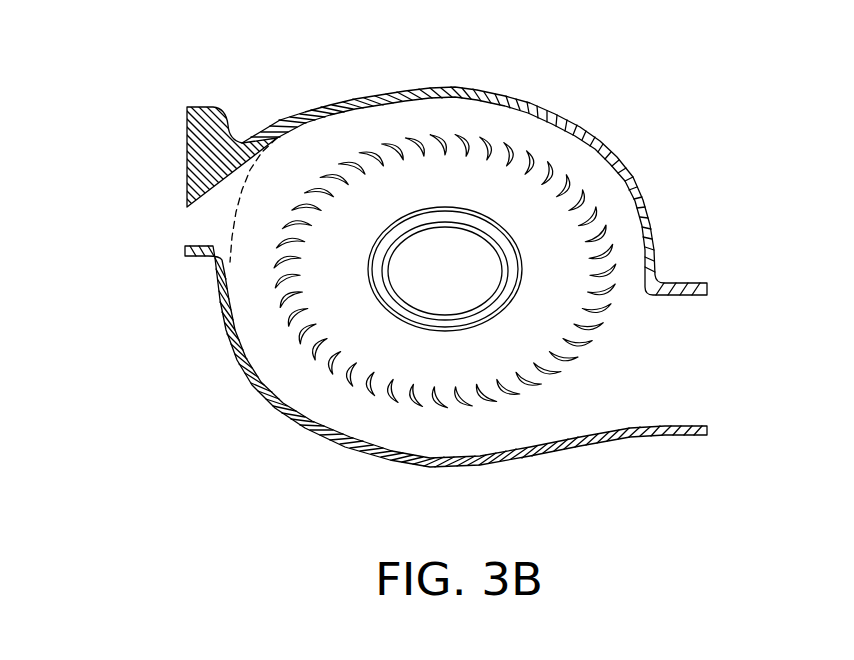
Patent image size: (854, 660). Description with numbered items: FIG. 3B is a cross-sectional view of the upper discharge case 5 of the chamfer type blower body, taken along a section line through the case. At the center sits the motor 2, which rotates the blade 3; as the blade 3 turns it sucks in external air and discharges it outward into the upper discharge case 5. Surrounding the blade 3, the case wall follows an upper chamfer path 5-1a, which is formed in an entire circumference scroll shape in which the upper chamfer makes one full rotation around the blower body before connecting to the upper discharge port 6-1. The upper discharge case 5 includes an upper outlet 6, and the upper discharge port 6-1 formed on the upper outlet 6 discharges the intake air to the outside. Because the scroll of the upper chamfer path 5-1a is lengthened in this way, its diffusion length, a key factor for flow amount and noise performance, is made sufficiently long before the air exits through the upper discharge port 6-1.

The motor 2 is at (457, 283).
The blade 3 is at (605, 308).
The upper discharge case 5 is at (523, 113).
The upper chamfer path 5-1a is at (237, 222).
The upper outlet 6 is at (662, 435).
The upper discharge port 6-1 is at (692, 365).